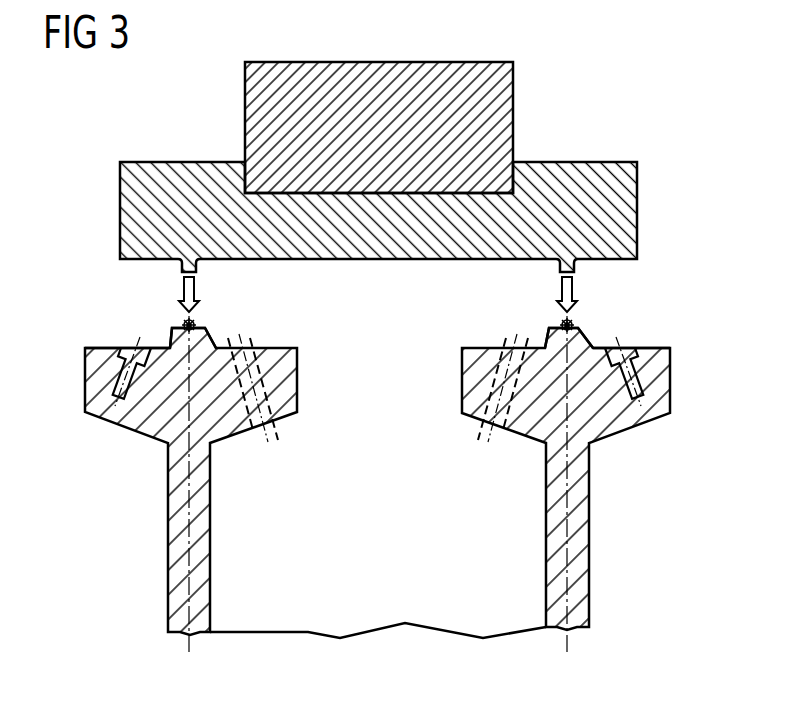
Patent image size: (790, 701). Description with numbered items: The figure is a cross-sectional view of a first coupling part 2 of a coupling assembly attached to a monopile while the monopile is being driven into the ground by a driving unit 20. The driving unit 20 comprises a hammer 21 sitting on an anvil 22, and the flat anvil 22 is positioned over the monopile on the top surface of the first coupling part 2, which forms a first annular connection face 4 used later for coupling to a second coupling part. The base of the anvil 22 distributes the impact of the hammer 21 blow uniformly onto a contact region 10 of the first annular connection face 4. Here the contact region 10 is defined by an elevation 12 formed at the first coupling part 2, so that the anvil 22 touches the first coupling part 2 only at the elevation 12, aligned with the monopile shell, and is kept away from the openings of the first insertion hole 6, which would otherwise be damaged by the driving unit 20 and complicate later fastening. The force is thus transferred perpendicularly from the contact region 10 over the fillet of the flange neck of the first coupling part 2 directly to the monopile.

The first coupling part 2 is at (103, 441).
The first annular connection face 4 is at (103, 345).
The first insertion hole 6 is at (112, 393).
The contact region 10 is at (192, 322).
The elevation 12 is at (198, 338).
The driving unit 20 is at (348, 163).
The hammer 21 is at (252, 106).
The anvil 22 is at (127, 211).